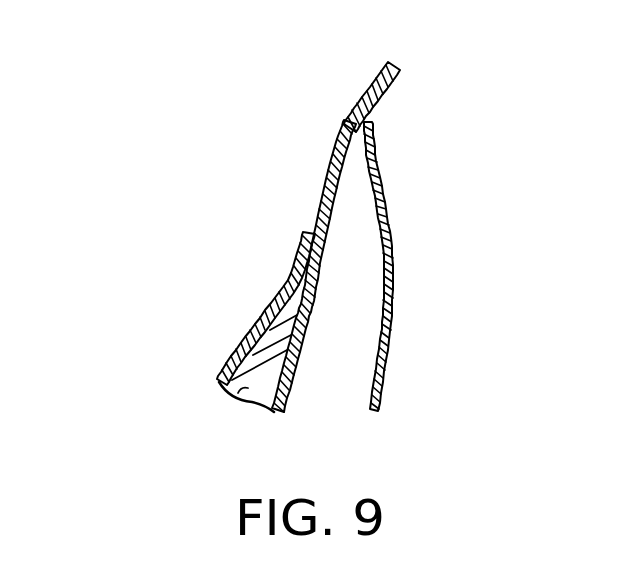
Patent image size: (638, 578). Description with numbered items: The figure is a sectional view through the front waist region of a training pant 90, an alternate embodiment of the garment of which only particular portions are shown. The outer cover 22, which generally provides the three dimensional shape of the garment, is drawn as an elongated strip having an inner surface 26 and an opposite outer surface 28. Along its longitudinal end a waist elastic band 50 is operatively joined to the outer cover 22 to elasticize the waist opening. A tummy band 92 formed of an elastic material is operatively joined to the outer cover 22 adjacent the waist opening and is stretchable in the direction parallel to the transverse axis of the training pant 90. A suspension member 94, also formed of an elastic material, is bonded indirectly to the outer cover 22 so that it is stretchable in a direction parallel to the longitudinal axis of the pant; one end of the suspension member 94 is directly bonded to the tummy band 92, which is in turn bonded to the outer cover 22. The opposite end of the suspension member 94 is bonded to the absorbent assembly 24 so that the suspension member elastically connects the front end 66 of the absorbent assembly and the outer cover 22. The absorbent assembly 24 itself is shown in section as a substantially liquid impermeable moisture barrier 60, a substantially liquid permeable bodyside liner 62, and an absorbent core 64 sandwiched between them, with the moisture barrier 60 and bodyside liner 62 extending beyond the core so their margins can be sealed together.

The training pant 90 is at (152, 185).
The tummy band 92 is at (380, 90).
The waist elastic band 50 is at (391, 86).
The suspension member 94 is at (314, 282).
The outer cover 22 is at (404, 287).
The inner surface 26 is at (384, 287).
The outer surface 28 is at (386, 373).
The front end 66 is at (249, 288).
The absorbent assembly 24 is at (248, 292).
The bodyside liner 62 is at (218, 388).
The absorbent core 64 is at (240, 392).
The moisture barrier 60 is at (289, 380).